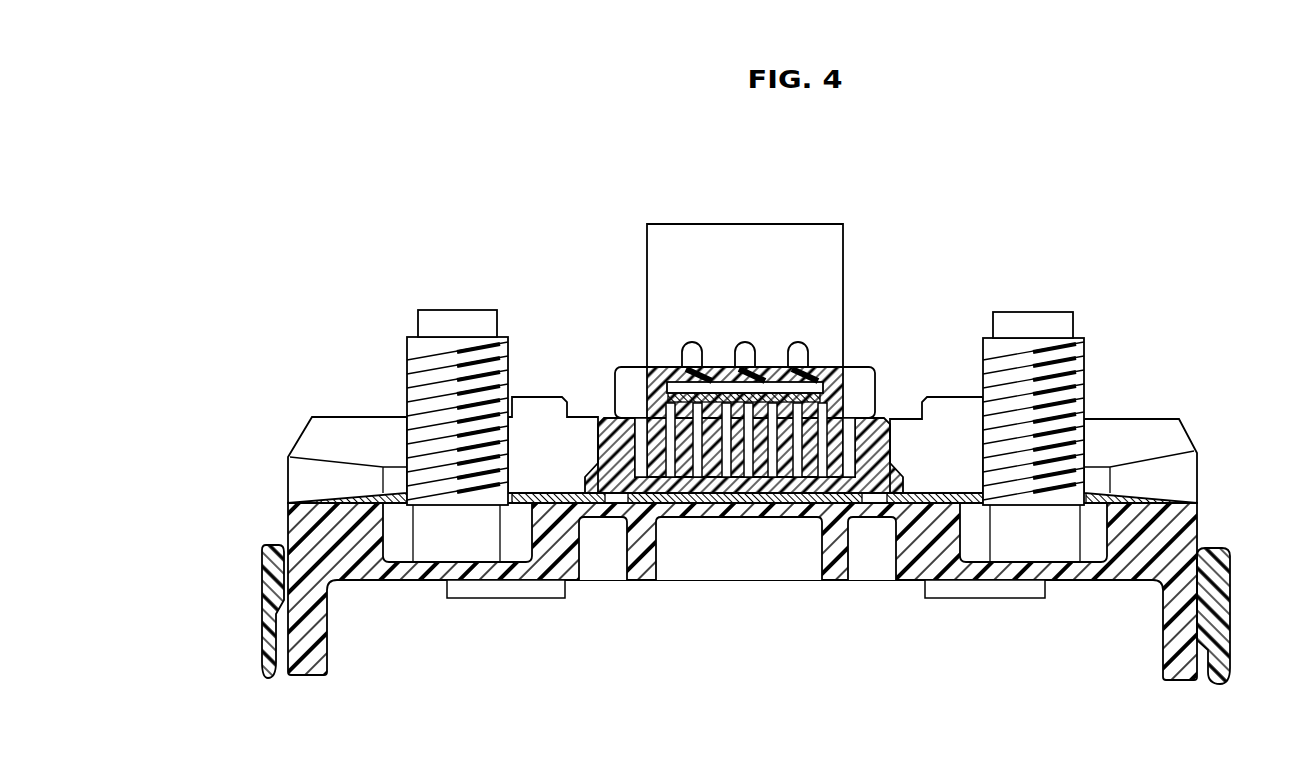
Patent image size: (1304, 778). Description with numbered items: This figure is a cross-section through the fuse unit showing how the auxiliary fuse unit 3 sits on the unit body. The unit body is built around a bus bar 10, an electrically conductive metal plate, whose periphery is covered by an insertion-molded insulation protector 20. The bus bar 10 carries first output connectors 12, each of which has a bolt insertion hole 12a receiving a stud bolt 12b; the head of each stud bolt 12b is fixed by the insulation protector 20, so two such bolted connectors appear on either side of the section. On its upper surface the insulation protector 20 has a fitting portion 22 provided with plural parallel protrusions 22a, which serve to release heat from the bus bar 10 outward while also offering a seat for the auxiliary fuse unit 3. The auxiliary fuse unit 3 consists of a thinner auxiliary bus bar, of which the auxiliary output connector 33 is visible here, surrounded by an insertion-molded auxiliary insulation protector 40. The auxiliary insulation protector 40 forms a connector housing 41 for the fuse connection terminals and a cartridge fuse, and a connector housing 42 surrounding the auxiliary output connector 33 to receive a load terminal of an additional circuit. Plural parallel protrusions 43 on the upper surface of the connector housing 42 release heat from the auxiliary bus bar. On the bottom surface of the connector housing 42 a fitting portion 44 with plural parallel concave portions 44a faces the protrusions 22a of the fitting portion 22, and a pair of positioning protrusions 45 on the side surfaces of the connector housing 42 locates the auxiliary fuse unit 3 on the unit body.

The auxiliary fuse unit 3 is at (746, 279).
The bus bar 10 is at (706, 500).
The first output connector 12 is at (347, 492).
The bolt insertion hole 12a is at (417, 482).
The stud bolt 12b is at (458, 316).
The insulation protector 20 is at (1167, 530).
The fitting portion 22 is at (640, 543).
The protrusions 22a is at (690, 467).
The auxiliary output connector 33 is at (672, 385).
The auxiliary insulation protector 40 is at (755, 477).
The connector housing 41 is at (822, 255).
The connector housing 42 is at (852, 375).
The protrusions 43 is at (692, 343).
The fitting portion 44 is at (866, 412).
The concave portions 44a is at (822, 470).
The positioning protrusions 45 is at (615, 390).